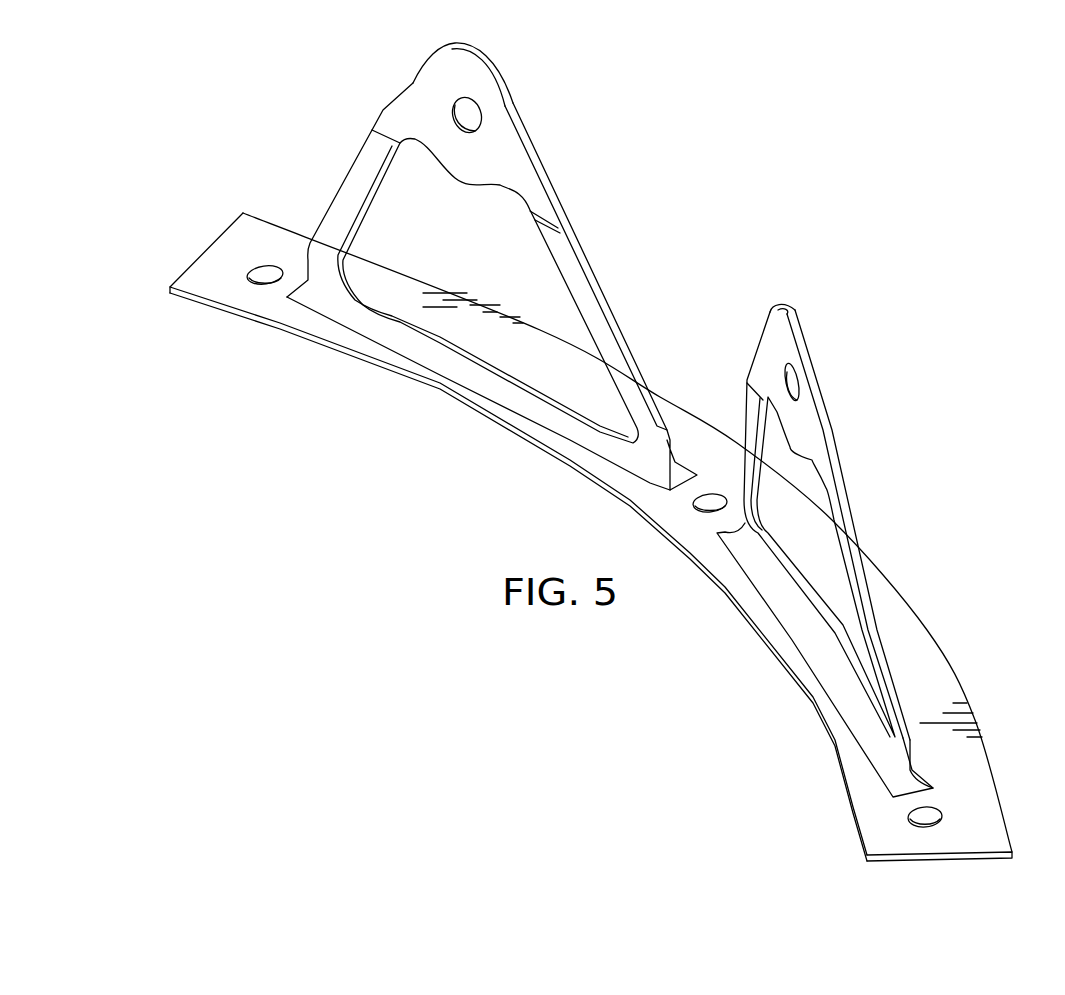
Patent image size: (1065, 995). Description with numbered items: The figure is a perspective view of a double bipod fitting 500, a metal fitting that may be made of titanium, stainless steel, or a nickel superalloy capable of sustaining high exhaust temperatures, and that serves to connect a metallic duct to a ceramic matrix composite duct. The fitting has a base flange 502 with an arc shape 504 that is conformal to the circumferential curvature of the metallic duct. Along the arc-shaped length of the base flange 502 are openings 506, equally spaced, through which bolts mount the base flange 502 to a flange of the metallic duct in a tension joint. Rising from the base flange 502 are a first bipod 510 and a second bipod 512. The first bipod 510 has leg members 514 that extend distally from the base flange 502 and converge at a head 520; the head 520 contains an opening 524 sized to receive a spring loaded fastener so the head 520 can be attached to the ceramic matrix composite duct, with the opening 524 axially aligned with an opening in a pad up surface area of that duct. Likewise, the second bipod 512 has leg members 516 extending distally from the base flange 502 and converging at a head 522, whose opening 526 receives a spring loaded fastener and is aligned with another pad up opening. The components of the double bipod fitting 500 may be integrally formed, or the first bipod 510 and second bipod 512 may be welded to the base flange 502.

The double bipod fitting 500 is at (846, 156).
The base flange 502 is at (947, 687).
The arc shape 504 is at (960, 590).
The openings 506 is at (707, 497).
The first bipod 510 is at (873, 459).
The second bipod 512 is at (594, 128).
The leg members 514 is at (850, 523).
The leg members 516 is at (595, 272).
The head 520 is at (812, 340).
The head 522 is at (505, 73).
The opening 524 is at (783, 367).
The opening 526 is at (450, 108).